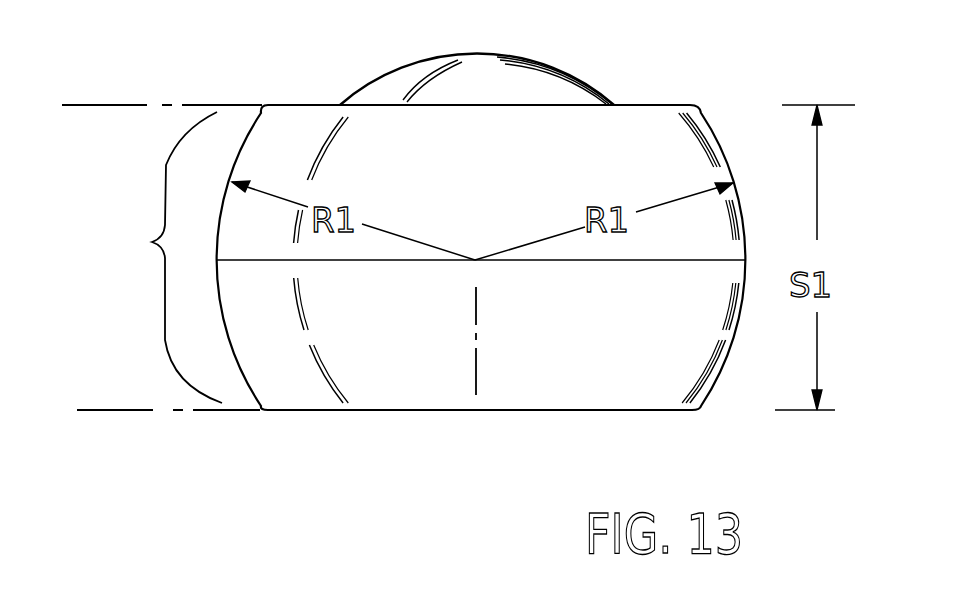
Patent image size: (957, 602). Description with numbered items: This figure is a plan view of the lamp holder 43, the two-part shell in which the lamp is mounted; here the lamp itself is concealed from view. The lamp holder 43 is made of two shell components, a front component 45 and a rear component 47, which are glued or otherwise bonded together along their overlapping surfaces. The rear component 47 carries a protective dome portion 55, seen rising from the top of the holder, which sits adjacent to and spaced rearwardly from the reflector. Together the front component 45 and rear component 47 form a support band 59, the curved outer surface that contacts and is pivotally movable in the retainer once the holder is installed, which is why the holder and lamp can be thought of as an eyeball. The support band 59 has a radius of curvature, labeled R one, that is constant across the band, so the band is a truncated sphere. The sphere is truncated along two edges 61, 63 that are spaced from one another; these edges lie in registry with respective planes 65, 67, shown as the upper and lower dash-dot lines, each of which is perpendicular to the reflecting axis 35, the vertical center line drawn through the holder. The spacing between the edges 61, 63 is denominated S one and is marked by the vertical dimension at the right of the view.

The reflecting axis 35 is at (478, 303).
The lamp holder 43 is at (733, 397).
The front component 45 is at (629, 393).
The rear component 47 is at (648, 135).
The protective dome portion 55 is at (392, 70).
The support band 59 is at (158, 257).
The edge 61 is at (278, 105).
The edge 63 is at (303, 410).
The plane 65 is at (130, 105).
The plane 67 is at (137, 410).